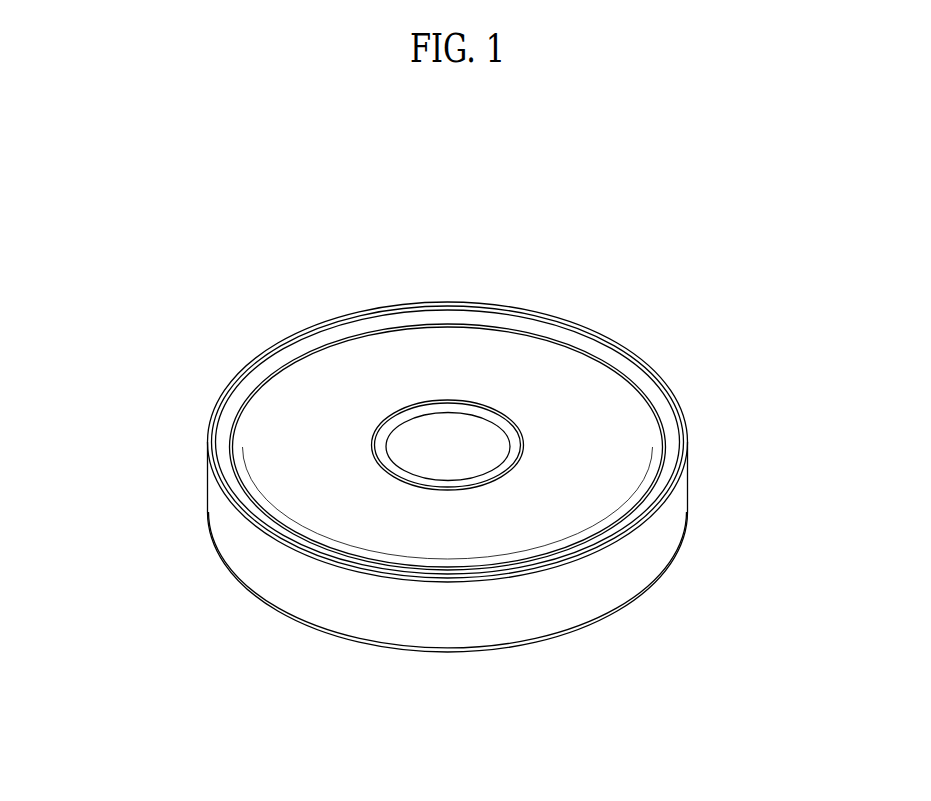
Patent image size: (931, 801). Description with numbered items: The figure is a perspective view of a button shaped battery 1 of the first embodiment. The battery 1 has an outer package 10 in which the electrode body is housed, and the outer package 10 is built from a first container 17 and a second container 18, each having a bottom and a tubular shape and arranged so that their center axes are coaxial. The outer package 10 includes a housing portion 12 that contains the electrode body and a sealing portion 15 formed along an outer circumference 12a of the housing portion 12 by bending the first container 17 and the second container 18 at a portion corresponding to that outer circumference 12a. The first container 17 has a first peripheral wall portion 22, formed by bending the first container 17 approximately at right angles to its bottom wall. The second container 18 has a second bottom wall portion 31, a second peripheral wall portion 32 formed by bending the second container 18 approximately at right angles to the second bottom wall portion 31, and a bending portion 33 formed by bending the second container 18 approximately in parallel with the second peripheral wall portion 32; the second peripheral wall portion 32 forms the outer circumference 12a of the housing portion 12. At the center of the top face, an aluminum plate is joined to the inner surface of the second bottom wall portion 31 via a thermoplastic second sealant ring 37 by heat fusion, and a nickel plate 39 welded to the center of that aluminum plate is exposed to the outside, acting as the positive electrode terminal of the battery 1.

The battery 1 is at (567, 298).
The outer package 10 is at (773, 330).
The housing portion 12 is at (627, 373).
The outer circumference of the housing portion 12a is at (381, 447).
The sealing portion 15 is at (670, 510).
The first container 17 is at (283, 592).
The second container 18 is at (95, 370).
The first peripheral wall portion 22 is at (450, 633).
The second bottom wall portion 31 is at (280, 407).
The second peripheral wall portion 32 is at (237, 492).
The bending portion 33 is at (222, 436).
The second sealant ring 37 is at (413, 413).
The nickel plate 39 is at (467, 433).